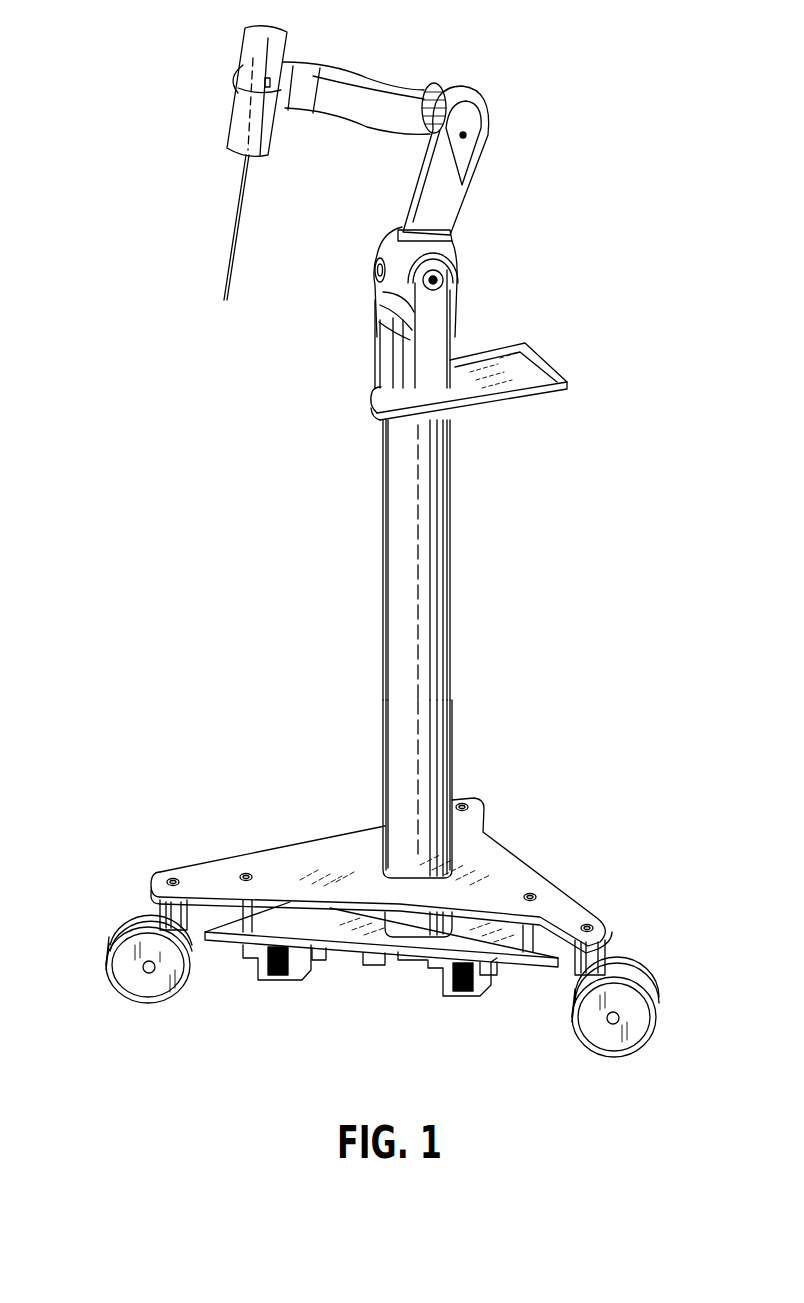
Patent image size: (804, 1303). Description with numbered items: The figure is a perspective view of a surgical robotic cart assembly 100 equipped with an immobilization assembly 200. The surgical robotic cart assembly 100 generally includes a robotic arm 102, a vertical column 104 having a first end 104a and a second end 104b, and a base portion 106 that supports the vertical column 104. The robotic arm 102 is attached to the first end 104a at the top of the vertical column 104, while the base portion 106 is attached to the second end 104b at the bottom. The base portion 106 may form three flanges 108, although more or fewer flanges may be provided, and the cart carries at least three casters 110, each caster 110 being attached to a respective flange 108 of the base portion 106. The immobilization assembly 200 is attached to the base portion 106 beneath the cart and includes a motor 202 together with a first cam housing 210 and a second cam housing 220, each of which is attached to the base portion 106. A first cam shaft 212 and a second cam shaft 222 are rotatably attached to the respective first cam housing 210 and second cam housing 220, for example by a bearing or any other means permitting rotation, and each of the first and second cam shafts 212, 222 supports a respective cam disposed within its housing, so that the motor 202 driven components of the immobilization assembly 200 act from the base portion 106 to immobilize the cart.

The surgical robotic cart assembly 100 is at (384, 555).
The robotic arm 102 is at (447, 205).
The vertical column 104 is at (469, 613).
The first end 104a is at (432, 462).
The second end 104b is at (423, 840).
The base portion 106 is at (413, 864).
The flanges 108 is at (172, 877).
The casters 110 is at (122, 949).
The immobilization assembly 200 is at (381, 993).
The motor 202 is at (373, 966).
The first cam housing 210 is at (262, 982).
The first cam shaft 212 is at (320, 957).
The second cam housing 220 is at (460, 995).
The second cam shaft 222 is at (413, 966).